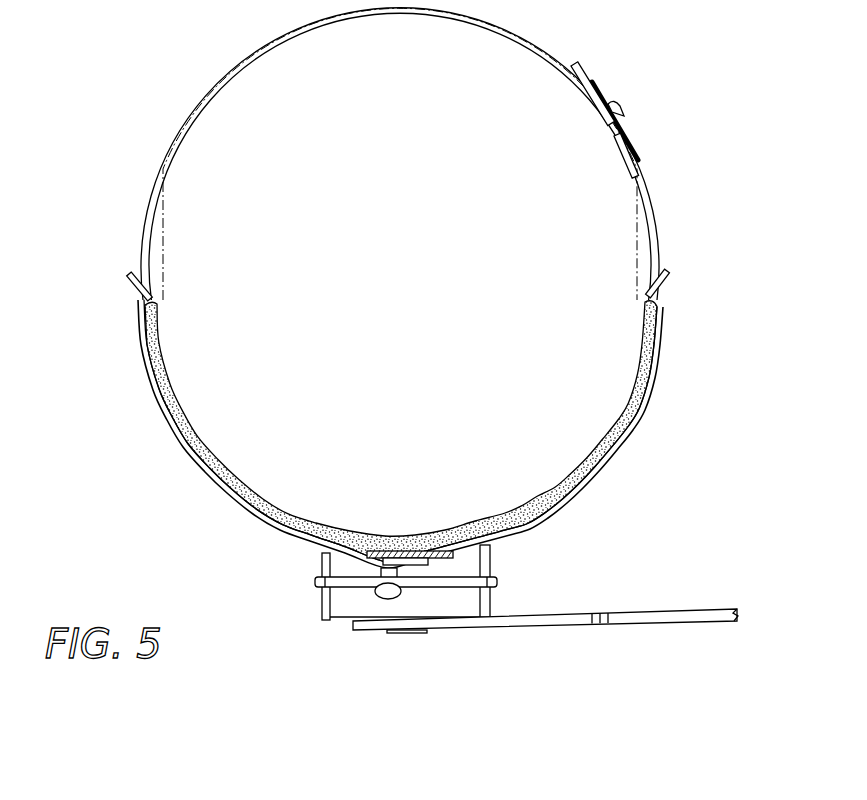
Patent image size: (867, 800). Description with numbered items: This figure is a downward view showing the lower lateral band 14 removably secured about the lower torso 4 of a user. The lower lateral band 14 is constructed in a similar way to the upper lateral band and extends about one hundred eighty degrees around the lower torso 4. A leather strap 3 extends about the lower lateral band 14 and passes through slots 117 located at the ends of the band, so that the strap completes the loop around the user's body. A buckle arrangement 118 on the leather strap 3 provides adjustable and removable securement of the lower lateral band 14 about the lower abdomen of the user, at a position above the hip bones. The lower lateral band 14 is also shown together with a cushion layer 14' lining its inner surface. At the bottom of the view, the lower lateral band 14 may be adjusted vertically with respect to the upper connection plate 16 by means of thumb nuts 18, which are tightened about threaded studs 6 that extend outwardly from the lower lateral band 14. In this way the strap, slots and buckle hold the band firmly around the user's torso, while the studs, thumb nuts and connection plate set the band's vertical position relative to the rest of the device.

The leather strap 3 is at (215, 88).
The lower torso 4 is at (419, 288).
The threaded studs 6 is at (410, 552).
The lower lateral band 14 is at (400, 431).
The cushion pad 14' is at (401, 431).
The upper connection plate 16 is at (367, 543).
The thumb nuts 18 is at (428, 553).
The slots 117 is at (148, 295).
The buckle arrangement 118 is at (628, 145).